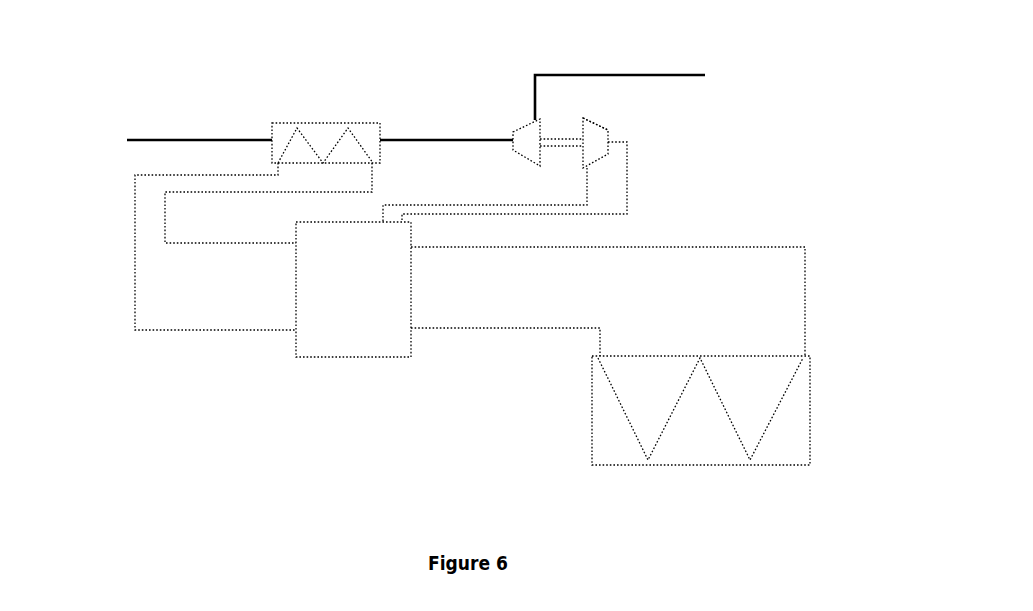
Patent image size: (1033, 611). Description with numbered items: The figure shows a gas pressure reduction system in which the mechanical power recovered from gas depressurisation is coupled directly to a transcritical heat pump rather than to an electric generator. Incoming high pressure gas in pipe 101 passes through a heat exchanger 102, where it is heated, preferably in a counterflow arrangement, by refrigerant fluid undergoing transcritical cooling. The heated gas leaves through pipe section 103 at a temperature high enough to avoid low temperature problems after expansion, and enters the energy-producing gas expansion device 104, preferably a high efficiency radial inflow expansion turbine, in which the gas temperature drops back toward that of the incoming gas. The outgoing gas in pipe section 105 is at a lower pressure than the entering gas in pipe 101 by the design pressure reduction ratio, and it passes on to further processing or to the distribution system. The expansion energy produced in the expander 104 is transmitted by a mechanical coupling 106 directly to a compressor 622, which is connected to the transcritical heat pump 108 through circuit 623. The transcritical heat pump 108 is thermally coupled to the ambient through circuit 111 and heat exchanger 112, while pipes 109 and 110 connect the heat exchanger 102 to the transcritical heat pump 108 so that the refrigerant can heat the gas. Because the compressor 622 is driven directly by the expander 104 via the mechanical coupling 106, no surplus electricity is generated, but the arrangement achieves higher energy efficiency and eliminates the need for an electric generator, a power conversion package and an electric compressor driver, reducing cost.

The pipe 101 is at (164, 132).
The heat exchanger 102 is at (288, 110).
The pipe section 103 is at (412, 130).
The gas expansion device 104 is at (523, 152).
The pipe section 105 is at (670, 63).
The mechanical coupling 106 is at (564, 139).
The compressor 622 is at (598, 123).
The circuit 623 is at (587, 183).
The transcritical heat pump 108 is at (323, 360).
The pipe 109 is at (199, 238).
The pipe 110 is at (175, 337).
The circuit 111 is at (595, 243).
The heat exchanger 112 is at (808, 442).